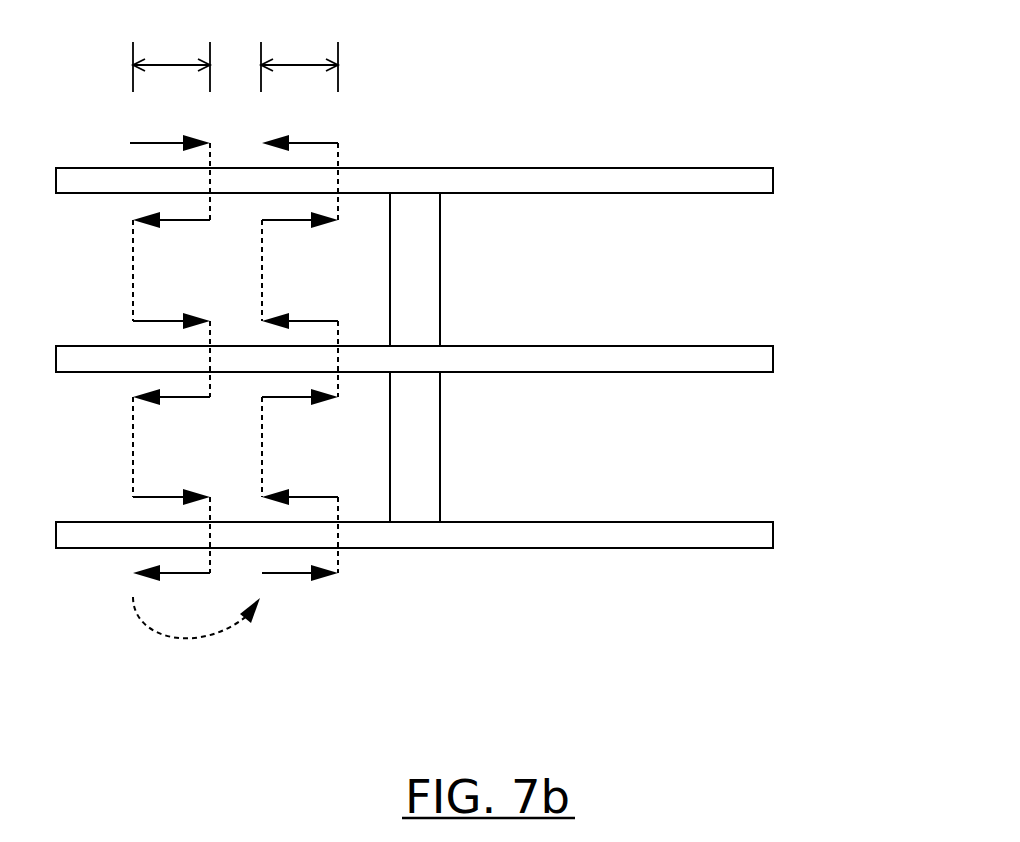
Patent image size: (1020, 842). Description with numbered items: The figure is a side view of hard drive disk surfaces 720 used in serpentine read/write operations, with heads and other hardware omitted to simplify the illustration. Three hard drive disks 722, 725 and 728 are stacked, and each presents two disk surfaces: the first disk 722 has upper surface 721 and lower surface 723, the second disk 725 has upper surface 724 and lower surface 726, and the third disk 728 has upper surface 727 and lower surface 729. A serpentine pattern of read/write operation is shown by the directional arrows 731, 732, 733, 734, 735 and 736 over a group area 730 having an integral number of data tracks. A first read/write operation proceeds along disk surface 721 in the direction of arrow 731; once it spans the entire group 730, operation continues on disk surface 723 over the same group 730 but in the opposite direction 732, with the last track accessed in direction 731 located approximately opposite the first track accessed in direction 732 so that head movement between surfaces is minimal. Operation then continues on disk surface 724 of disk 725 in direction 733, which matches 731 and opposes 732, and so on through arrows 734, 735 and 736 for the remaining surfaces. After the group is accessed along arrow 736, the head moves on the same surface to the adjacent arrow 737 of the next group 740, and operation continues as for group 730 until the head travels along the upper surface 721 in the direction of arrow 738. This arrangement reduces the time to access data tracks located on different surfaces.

The hard drive disk surfaces 720 is at (888, 59).
The disk surface 721 is at (706, 156).
The hard drive disk 722 is at (463, 183).
The disk surface 723 is at (622, 193).
The disk surface 724 is at (711, 339).
The hard drive disk 725 is at (466, 363).
The disk surface 726 is at (632, 372).
The disk surface 727 is at (718, 514).
The hard drive disk 728 is at (472, 540).
The disk surface 729 is at (632, 548).
The group area 730 is at (207, 55).
The next group 740 is at (336, 55).
The directional arrow 731 is at (129, 156).
The directional arrow 732 is at (129, 233).
The directional arrow 733 is at (129, 334).
The directional arrow 734 is at (129, 410).
The directional arrow 735 is at (129, 510).
The directional arrow 736 is at (129, 586).
The directional arrow 737 is at (391, 586).
The directional arrow 738 is at (399, 156).